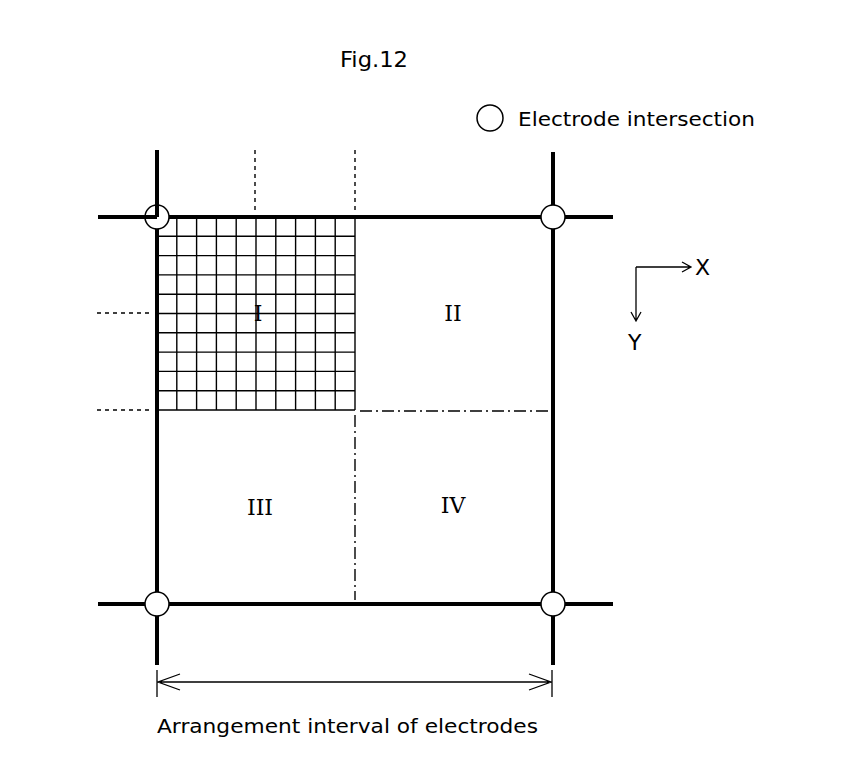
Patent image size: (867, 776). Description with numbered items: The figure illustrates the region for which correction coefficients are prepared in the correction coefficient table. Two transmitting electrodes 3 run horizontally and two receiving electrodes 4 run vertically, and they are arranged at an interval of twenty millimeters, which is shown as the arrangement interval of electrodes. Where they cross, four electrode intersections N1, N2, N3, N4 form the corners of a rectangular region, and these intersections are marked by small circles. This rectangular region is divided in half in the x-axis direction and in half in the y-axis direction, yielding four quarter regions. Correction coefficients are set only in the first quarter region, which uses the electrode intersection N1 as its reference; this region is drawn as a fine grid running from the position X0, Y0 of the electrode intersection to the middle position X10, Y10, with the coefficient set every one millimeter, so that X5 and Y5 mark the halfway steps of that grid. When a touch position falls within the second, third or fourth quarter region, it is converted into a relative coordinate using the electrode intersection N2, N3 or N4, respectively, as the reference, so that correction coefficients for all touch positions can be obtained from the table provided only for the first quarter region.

The transmitting electrode 3 is at (598, 216).
The receiving electrode 4 is at (155, 505).
The electrode intersection N1 is at (140, 203).
The electrode intersection N2 is at (536, 203).
The electrode intersection N3 is at (139, 618).
The electrode intersection N4 is at (570, 619).
The position X0 is at (152, 167).
The position X5 is at (247, 165).
The position X10 is at (353, 165).
The position Y0 is at (105, 215).
The position Y5 is at (104, 313).
The position Y10 is at (102, 415).